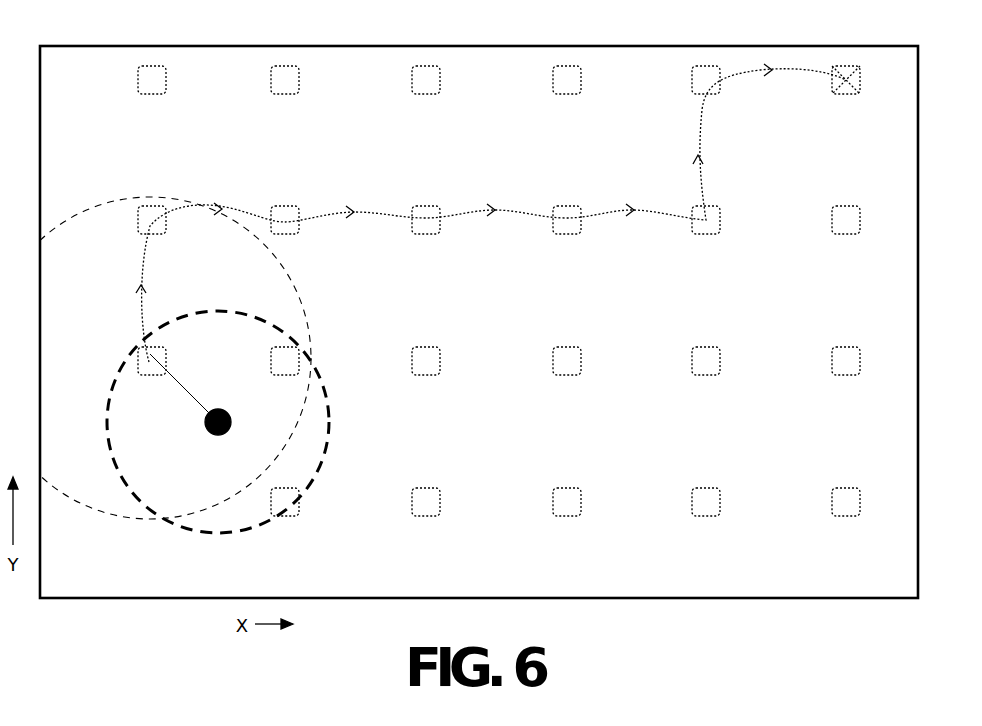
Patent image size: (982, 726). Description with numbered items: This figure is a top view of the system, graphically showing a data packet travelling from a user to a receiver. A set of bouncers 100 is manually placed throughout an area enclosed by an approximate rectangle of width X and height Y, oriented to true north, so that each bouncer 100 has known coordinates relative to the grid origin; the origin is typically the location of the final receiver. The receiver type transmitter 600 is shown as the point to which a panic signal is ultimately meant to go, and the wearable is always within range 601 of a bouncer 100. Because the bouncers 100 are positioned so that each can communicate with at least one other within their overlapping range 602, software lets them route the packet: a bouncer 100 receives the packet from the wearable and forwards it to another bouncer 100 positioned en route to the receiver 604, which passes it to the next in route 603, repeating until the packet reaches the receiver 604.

The bouncer 100 is at (145, 366).
The receiver type transmitter 600 is at (200, 432).
The range 601 is at (252, 545).
The overlapping range 602 is at (321, 331).
The route 603 is at (540, 206).
The receiver 604 is at (848, 113).